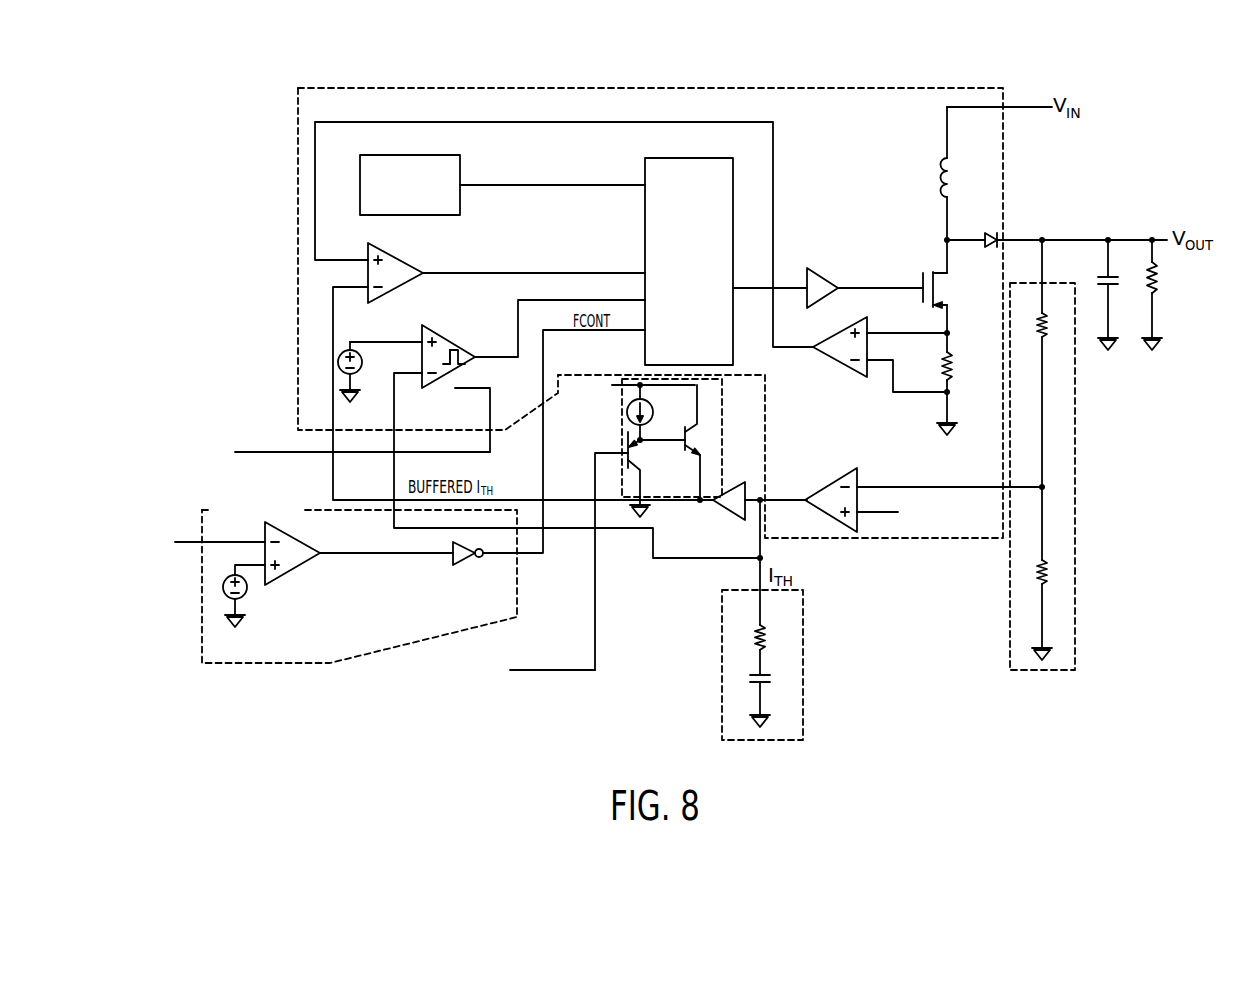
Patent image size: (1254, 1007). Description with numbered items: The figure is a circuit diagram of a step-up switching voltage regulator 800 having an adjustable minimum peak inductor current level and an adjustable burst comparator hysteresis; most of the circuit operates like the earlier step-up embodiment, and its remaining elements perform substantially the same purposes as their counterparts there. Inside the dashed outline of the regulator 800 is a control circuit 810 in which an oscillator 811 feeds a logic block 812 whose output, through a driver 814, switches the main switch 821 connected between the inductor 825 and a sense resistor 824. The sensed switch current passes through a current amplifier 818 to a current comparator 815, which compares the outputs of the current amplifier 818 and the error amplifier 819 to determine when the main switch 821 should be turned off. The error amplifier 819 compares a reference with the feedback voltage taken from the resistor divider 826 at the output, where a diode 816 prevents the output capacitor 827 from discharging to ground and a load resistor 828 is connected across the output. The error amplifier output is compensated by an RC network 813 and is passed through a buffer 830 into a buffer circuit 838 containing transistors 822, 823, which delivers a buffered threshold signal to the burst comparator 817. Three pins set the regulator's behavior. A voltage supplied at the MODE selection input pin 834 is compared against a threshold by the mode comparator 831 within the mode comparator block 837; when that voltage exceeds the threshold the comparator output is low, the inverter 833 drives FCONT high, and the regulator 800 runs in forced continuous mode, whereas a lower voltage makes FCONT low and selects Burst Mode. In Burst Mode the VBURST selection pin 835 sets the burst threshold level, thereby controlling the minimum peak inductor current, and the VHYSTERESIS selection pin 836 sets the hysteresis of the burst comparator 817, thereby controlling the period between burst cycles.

The step-up switching voltage regulator 800 is at (920, 63).
The control circuit 810 is at (293, 358).
The oscillator 811 is at (440, 155).
The logic 812 is at (700, 290).
The compensation network 813 is at (803, 668).
The driver 814 is at (823, 268).
The current comparator 815 is at (408, 260).
The diode 816 is at (992, 234).
The burst comparator 817 is at (472, 352).
The current amplifier 818 is at (833, 335).
The error amplifier 819 is at (818, 490).
The switching transistor 821 is at (950, 288).
The PNP transistor 822 is at (622, 432).
The NPN transistor 823 is at (698, 433).
The sense resistor 824 is at (963, 373).
The inductor 825 is at (935, 173).
The feedback resistor divider 826 is at (1078, 524).
The output capacitor 827 is at (1118, 296).
The load resistor 828 is at (1172, 288).
The buffer 830 is at (712, 503).
The mode comparator 831 is at (300, 568).
The inverter 833 is at (468, 563).
The MODE selection input pin 834 is at (201, 517).
The VBURST selection input pin 835 is at (568, 673).
The VHYSTERESIS selection input pin 836 is at (273, 452).
The mode comparator circuit 837 is at (285, 664).
The buffer circuit 838 is at (725, 423).